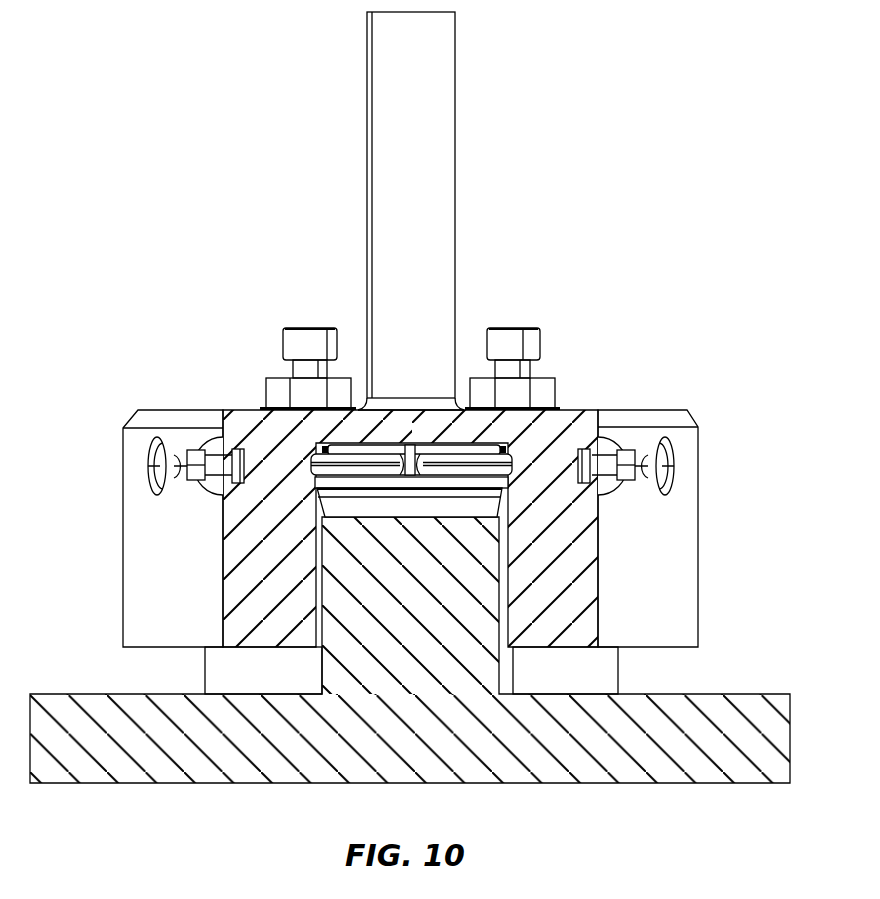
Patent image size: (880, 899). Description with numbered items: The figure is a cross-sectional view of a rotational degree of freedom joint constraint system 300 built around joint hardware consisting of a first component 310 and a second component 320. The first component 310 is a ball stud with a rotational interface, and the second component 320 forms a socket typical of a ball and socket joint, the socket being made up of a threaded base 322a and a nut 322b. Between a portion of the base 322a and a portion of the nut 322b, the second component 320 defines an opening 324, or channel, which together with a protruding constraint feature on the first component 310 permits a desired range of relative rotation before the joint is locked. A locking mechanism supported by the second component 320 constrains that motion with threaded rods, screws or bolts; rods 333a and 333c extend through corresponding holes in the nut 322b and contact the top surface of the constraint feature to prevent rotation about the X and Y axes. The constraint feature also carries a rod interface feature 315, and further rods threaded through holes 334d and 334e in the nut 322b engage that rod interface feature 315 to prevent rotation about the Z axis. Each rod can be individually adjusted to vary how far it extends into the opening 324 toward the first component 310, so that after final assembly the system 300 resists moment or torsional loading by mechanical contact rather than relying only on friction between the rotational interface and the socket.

The rotational degree of freedom joint constraint system 300 is at (242, 128).
The first component 310 is at (483, 122).
The rod interface feature 315 is at (408, 455).
The second component 320 is at (747, 613).
The threaded base 322a is at (205, 668).
The nut 322b is at (123, 548).
The opening 324 is at (487, 506).
The rod 333a is at (305, 327).
The rod 333c is at (512, 327).
The hole 334d is at (197, 450).
The hole 334e is at (627, 448).